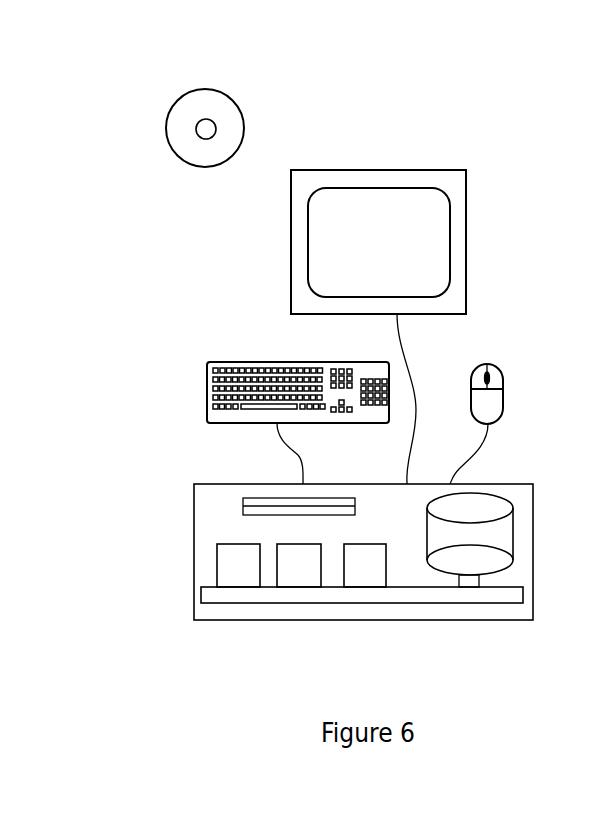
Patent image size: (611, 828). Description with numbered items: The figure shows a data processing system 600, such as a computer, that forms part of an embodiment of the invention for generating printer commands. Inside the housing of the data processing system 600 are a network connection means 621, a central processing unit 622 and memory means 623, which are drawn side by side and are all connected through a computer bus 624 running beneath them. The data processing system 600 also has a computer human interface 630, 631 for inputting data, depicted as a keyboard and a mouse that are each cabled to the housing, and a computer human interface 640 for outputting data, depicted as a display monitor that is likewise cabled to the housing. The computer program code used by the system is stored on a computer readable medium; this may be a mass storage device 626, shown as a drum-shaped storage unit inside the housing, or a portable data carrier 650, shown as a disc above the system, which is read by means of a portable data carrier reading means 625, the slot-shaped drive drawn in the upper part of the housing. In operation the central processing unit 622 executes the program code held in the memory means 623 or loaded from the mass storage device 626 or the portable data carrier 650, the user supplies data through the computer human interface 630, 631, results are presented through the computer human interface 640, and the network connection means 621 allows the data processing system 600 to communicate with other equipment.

The data processing system 600 is at (534, 512).
The network connection means 621 is at (237, 565).
The central processing unit 622 is at (296, 565).
The memory means 623 is at (359, 565).
The computer bus 624 is at (520, 595).
The portable data carrier reading means 625 is at (243, 500).
The mass storage device 626 is at (507, 548).
The computer human interface for inputting data 630 is at (225, 362).
The computer human interface for inputting data 631 is at (505, 397).
The computer human interface for outputting data 640 is at (467, 230).
The portable data carrier 650 is at (184, 92).